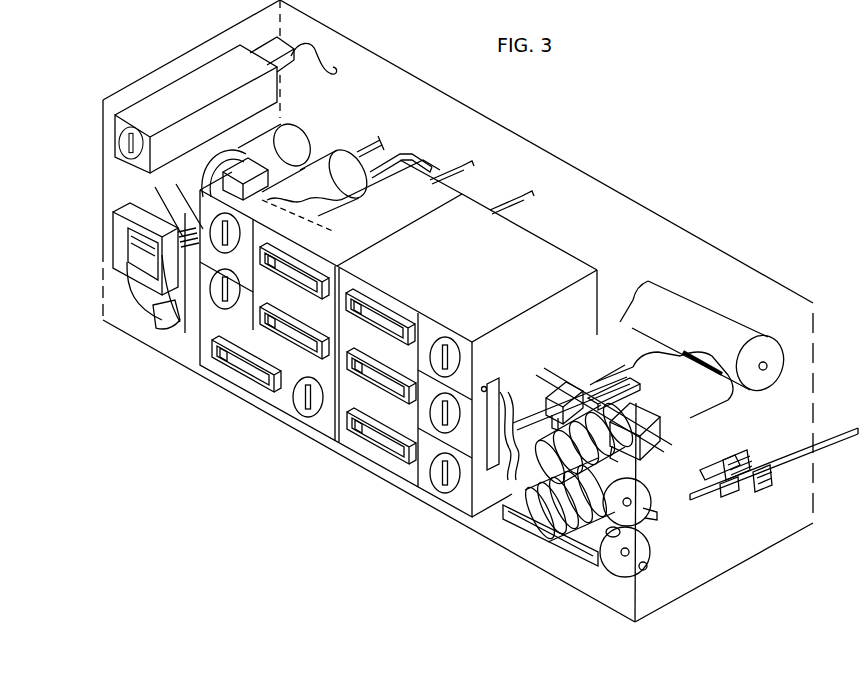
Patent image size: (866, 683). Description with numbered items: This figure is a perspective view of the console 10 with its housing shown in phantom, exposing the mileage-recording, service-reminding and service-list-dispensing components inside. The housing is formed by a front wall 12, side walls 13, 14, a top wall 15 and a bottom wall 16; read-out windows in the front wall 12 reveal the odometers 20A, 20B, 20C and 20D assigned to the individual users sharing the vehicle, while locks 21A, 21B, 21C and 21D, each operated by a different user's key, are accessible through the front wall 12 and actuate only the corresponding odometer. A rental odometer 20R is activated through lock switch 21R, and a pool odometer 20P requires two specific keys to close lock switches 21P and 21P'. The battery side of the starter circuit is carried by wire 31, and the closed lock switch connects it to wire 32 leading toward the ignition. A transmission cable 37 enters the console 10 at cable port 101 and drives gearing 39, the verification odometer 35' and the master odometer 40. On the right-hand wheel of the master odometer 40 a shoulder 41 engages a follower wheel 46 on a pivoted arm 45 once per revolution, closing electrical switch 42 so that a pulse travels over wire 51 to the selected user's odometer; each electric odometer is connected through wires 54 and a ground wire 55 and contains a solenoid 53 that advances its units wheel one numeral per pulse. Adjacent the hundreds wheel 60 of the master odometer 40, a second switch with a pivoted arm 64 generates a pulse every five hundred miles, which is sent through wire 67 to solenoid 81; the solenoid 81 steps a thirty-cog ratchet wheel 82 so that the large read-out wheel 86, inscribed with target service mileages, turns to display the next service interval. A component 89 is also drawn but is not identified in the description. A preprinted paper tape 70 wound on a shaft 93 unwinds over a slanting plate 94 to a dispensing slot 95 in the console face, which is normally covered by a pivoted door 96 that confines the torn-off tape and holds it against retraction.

The console 10 is at (524, 137).
The front wall 12 is at (420, 495).
The side wall 13 is at (204, 105).
The side wall 14 is at (810, 326).
The top wall 15 is at (592, 182).
The bottom wall 16 is at (212, 384).
The odometer 20A is at (310, 262).
The odometer 20B is at (318, 420).
The odometer 20C is at (390, 300).
The odometer 20D is at (372, 470).
The odometer 20P is at (368, 455).
The odometer 20R is at (130, 272).
The lock 21A is at (153, 318).
The lock 21B is at (165, 333).
The lock 21C is at (445, 338).
The lock 21D is at (486, 355).
The lock switch 21P is at (275, 414).
The lock switch 21P' is at (439, 495).
The lock switch 21R is at (136, 108).
The electrical conductor or wire 31 is at (360, 148).
The electrical conductor or wire 32 is at (338, 148).
The verification odometer 35' is at (581, 536).
The transmission cable 37 is at (795, 455).
The gearing 39 is at (728, 490).
The master odometer 40 is at (563, 437).
The shoulder or abutment 41 is at (548, 538).
The electrical switch 42 is at (640, 401).
The pivoted arm 45 is at (631, 430).
The follower wheel 46 is at (635, 458).
The wire 51 is at (405, 154).
The solenoid 53 is at (413, 208).
The wires 54 is at (430, 178).
The wire 55 is at (460, 176).
The hundreds wheel 60 is at (544, 455).
The pivoted arm 64 is at (545, 412).
The wire 67 is at (345, 128).
The paper tape 70 is at (650, 285).
The solenoid 81 is at (282, 136).
The ratchet wheel 82 is at (214, 178).
The read-out wheel 86 is at (160, 190).
The display 89 is at (128, 238).
The shaft 93 is at (768, 378).
The slanting plate 94 is at (697, 395).
The dispensing slot 95 is at (483, 387).
The pivoted door 96 is at (498, 446).
The cable port 101 is at (760, 455).